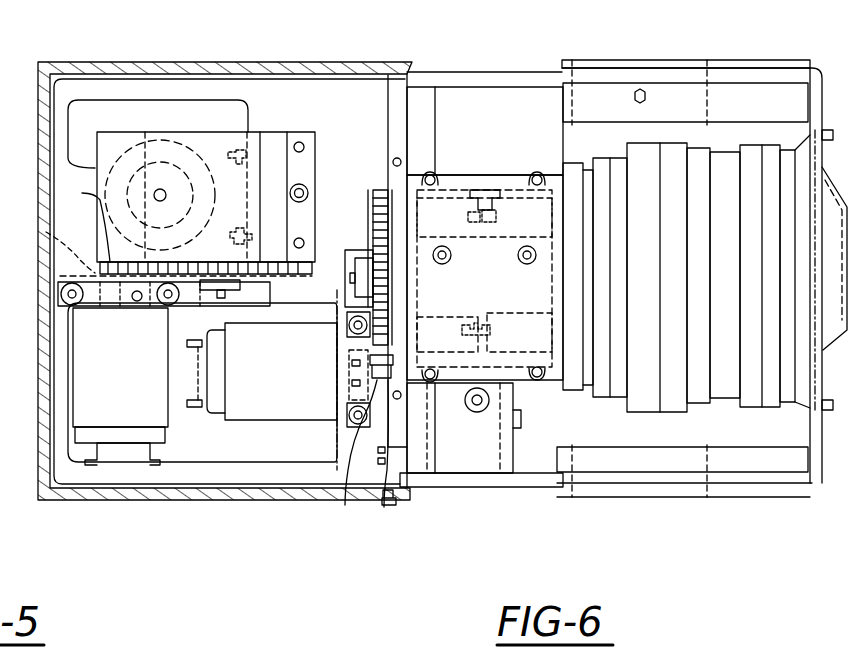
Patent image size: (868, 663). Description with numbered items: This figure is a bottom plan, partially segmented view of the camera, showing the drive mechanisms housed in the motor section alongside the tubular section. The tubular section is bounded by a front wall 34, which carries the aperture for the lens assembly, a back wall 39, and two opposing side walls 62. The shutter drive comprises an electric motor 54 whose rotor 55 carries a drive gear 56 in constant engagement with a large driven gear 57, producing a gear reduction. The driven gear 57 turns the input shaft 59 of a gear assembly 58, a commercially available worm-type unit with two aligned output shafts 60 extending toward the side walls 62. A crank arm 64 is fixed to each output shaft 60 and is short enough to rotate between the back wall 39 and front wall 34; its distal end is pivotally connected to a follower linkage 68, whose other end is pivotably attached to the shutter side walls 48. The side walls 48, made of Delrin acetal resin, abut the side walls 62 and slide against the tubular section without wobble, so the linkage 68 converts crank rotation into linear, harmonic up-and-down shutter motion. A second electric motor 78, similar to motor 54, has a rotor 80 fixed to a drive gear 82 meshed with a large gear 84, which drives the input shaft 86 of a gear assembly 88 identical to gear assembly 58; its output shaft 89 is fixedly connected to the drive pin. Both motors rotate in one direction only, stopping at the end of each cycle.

The front wall 34 is at (551, 190).
The back wall 39 is at (410, 207).
The side walls 48 is at (515, 190).
The electric motor 54 is at (305, 395).
The rotor 55 is at (354, 456).
The drive gear 56 is at (393, 457).
The driven gear 57 is at (380, 338).
The gear assembly 58 is at (490, 293).
The input shaft 59 is at (394, 262).
The output shafts 60 is at (487, 190).
The side walls 62 is at (462, 185).
The crank arm 64 is at (466, 237).
The follower linkage 68 is at (485, 212).
The electric motor 78 is at (158, 405).
The rotor 80 is at (46, 232).
The drive gear 82 is at (81, 223).
The large gear 84 is at (310, 262).
The input shaft 86 is at (225, 298).
The gear assembly 88 is at (230, 150).
The output shaft 89 is at (162, 189).